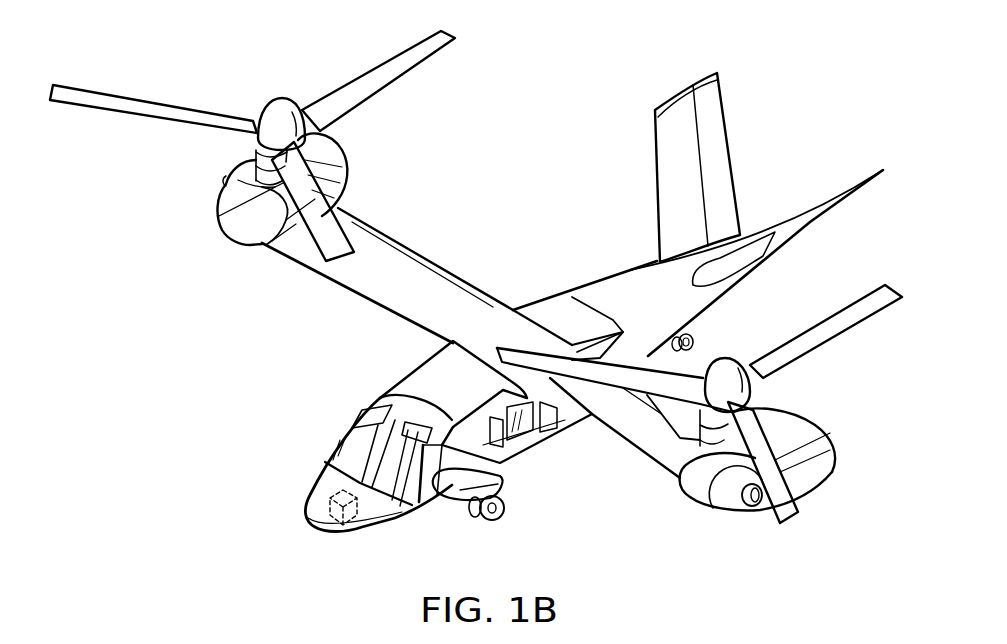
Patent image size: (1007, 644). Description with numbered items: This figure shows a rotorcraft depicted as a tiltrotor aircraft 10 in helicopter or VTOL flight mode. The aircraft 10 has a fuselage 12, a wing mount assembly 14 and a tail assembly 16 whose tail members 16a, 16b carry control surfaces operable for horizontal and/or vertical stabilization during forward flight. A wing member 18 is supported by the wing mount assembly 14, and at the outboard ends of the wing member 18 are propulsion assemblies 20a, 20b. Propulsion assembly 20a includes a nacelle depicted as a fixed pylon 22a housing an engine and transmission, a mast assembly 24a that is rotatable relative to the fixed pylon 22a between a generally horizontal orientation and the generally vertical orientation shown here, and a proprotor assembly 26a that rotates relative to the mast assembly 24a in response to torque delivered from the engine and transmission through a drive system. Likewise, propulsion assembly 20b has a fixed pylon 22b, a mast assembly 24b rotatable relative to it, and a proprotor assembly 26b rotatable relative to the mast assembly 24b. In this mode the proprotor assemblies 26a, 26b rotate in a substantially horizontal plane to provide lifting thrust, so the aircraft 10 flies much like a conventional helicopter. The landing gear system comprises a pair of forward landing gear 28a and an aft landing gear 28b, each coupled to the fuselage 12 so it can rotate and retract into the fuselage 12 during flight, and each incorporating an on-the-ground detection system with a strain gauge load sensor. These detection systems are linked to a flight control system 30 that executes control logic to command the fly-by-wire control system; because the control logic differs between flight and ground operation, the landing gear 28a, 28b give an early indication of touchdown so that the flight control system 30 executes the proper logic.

The tiltrotor aircraft 10 is at (583, 86).
The fuselage 12 is at (628, 282).
The wing mount assembly 14 is at (558, 312).
The tail assembly 16 is at (734, 173).
The tail member 16a is at (803, 223).
The tail member 16b is at (712, 118).
The wing member 18 is at (447, 298).
The propulsion assembly 20a is at (847, 479).
The propulsion assembly 20b is at (352, 180).
The fixed pylon 22a is at (852, 430).
The fixed pylon 22b is at (340, 150).
The mast assembly 24a is at (698, 443).
The mast assembly 24b is at (242, 243).
The proprotor assembly 26a is at (878, 313).
The proprotor assembly 26b is at (276, 99).
The forward landing gear 28a is at (494, 520).
The aft landing gear 28b is at (691, 339).
The flight control system 30 is at (331, 505).